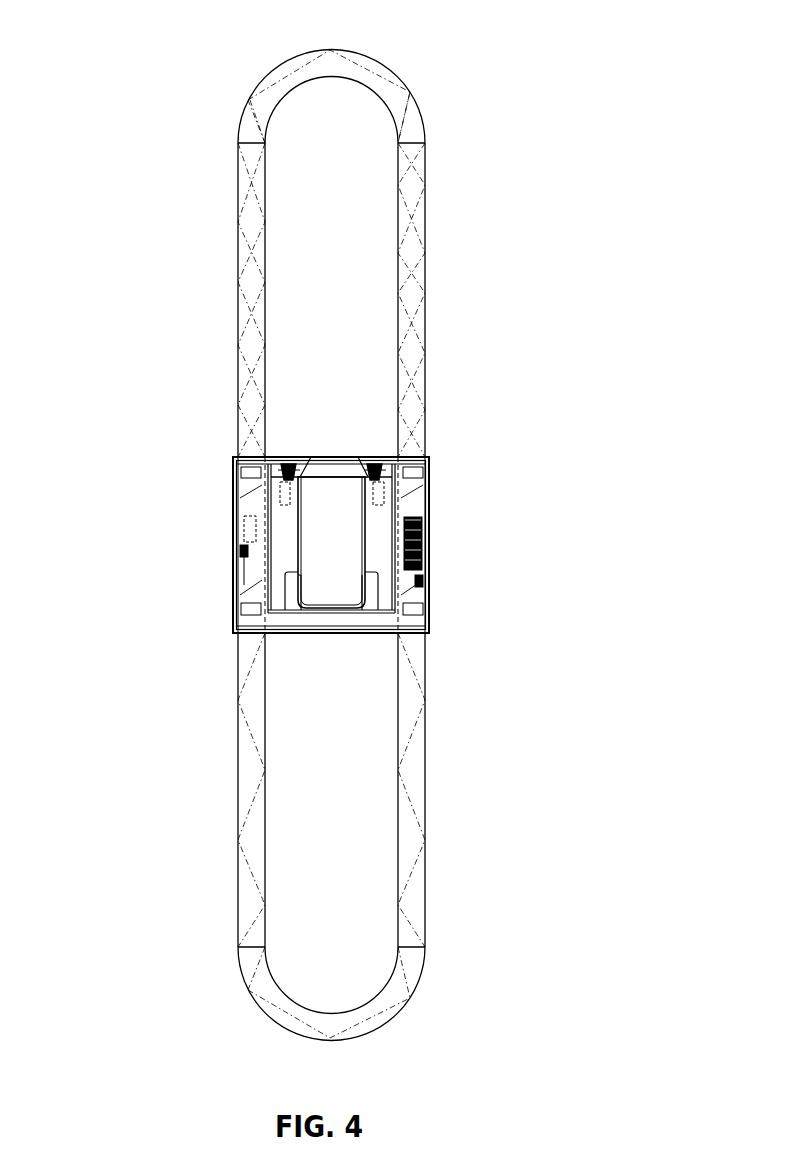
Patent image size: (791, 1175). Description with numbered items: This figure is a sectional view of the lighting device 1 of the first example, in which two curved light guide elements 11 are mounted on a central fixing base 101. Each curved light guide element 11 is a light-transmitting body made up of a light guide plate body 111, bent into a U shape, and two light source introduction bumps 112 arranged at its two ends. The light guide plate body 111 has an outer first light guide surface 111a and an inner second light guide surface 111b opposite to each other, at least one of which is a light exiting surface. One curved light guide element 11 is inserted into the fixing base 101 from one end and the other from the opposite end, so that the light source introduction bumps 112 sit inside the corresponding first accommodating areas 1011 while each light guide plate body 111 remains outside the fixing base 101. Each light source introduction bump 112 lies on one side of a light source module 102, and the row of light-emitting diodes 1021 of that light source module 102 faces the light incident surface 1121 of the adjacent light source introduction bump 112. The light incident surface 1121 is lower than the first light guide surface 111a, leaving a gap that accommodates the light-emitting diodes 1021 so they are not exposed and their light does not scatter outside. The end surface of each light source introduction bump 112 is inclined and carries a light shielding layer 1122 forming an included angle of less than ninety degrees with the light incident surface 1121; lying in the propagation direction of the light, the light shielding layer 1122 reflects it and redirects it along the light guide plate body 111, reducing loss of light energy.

The lighting device 1 is at (188, 122).
The curved light guide element 11 is at (460, 255).
The light guide plate body 111 is at (427, 143).
The first light guide surface 111a is at (427, 410).
The second light guide surface 111b is at (402, 355).
The fixing base 101 is at (226, 453).
The light source module 102 is at (233, 530).
The first accommodating area 1011 is at (233, 548).
The light-emitting diode 1021 is at (233, 490).
The light source introduction bump 112 is at (233, 466).
The light incident surface 1121 is at (233, 503).
The light shielding layer 1122 is at (358, 457).